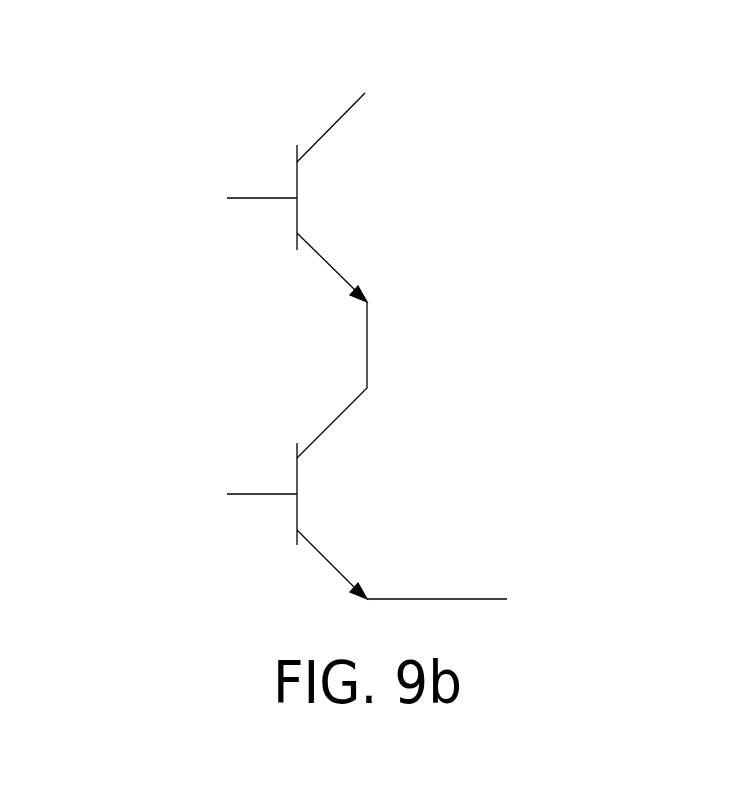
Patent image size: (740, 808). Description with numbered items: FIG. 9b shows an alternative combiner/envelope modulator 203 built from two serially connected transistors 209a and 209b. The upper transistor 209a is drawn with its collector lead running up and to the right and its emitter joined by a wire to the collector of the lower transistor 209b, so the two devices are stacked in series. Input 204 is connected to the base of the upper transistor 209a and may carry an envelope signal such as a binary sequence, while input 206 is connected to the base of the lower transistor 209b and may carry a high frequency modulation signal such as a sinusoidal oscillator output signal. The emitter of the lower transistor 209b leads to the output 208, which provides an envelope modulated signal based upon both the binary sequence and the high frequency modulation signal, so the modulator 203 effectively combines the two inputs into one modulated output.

The combiner/envelope modulator 203 is at (269, 316).
The input 204 is at (244, 180).
The input 206 is at (244, 477).
The output 208 is at (440, 582).
The transistor 209a is at (341, 197).
The transistor 209b is at (341, 521).